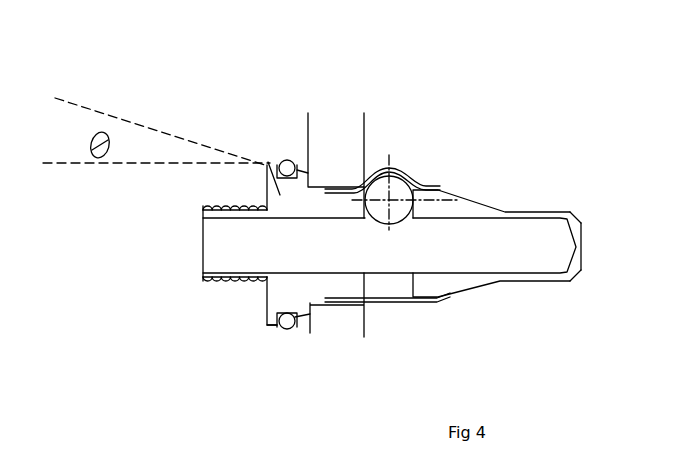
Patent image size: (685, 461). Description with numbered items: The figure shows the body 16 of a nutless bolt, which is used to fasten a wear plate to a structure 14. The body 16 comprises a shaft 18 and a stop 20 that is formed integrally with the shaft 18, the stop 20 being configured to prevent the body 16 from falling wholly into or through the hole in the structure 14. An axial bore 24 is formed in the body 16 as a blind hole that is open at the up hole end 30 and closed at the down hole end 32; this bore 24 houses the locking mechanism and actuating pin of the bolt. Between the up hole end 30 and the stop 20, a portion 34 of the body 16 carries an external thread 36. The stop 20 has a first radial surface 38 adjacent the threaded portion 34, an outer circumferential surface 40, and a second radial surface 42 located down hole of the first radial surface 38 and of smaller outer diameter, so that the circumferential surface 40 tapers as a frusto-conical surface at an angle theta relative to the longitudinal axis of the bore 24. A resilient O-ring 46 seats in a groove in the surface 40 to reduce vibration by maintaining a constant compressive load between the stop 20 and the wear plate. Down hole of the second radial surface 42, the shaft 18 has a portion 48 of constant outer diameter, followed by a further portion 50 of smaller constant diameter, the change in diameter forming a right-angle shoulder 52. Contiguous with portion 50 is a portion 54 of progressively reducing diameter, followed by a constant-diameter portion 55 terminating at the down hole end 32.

The structure 14 is at (348, 138).
The body 16 is at (247, 311).
The shaft 18 is at (453, 208).
The stop 20 is at (268, 162).
The axial bore 24 is at (518, 242).
The up hole end 30 is at (203, 237).
The down hole end 32 is at (582, 263).
The threaded portion 34 is at (217, 290).
The external thread 36 is at (228, 208).
The first radial surface 38 is at (263, 320).
The outer circumferential surface 40 is at (272, 327).
The second radial surface 42 is at (315, 290).
The O-ring 46 is at (284, 160).
The constant outer diameter portion 48 is at (322, 187).
The further constant outer diameter portion 50 is at (322, 303).
The shoulder 52 is at (330, 188).
The progressively reducing diameter portion 54 is at (462, 288).
The constant outer diameter end portion 55 is at (552, 283).